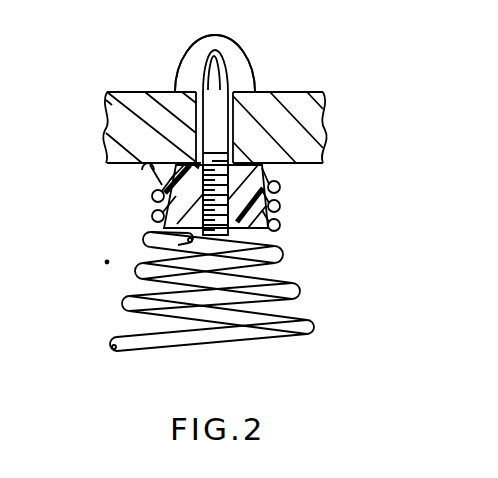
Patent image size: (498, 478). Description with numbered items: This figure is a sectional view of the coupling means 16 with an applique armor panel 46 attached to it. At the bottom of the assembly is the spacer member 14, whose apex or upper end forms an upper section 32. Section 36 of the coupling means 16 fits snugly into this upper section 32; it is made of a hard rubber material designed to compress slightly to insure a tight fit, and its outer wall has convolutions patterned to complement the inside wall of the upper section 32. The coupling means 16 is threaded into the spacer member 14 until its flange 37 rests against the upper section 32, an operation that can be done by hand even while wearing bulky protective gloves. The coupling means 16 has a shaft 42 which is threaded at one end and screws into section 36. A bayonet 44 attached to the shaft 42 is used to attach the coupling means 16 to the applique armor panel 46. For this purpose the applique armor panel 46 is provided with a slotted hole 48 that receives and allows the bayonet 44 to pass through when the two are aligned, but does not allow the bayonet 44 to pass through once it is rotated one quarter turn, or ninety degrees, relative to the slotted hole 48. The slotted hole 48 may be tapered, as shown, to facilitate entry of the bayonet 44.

The spacer member 14 is at (201, 291).
The coupling means 16 is at (188, 58).
The upper section 32 is at (287, 256).
The section 36 is at (279, 188).
The flange 37 is at (145, 167).
The shaft 42 is at (240, 92).
The bayonet 44 is at (237, 52).
The applique armor panel 46 is at (326, 126).
The slotted hole 48 is at (195, 157).